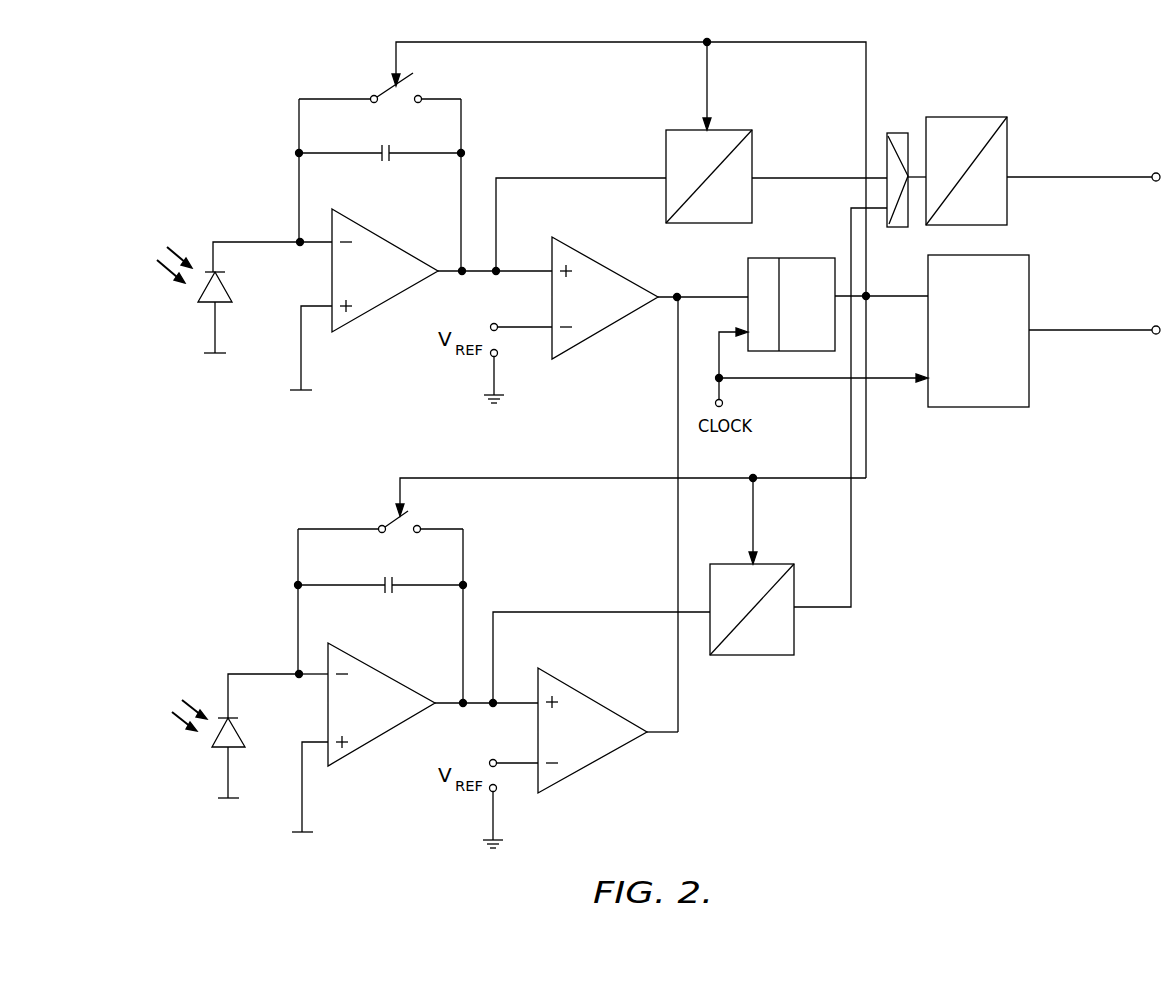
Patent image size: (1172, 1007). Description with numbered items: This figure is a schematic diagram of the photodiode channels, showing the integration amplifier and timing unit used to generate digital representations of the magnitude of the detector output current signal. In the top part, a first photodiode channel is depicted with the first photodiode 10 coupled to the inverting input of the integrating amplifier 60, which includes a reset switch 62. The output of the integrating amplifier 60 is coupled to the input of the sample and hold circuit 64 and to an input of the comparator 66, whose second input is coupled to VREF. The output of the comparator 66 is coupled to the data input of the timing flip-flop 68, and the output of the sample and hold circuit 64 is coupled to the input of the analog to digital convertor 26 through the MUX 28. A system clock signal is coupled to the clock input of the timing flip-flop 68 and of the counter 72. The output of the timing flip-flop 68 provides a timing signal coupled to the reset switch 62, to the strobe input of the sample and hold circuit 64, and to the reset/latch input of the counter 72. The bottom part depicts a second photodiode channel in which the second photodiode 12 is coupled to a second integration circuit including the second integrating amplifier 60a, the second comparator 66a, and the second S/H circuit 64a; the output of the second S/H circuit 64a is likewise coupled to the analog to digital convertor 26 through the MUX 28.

The first photodiode 10 is at (228, 290).
The second photodiode 12 is at (243, 734).
The analog to digital convertor 26 is at (1000, 117).
The MUX 28 is at (896, 133).
The integrating amplifier 60 is at (384, 240).
The second integrating amplifier 60a is at (382, 672).
The reset switch 62 is at (392, 85).
The sample and hold circuit 64 is at (740, 131).
The second S/H circuit 64a is at (770, 564).
The comparator 66 is at (607, 265).
The second comparator 66a is at (590, 697).
The timing flip-flop 68 is at (803, 258).
The counter 72 is at (1029, 264).